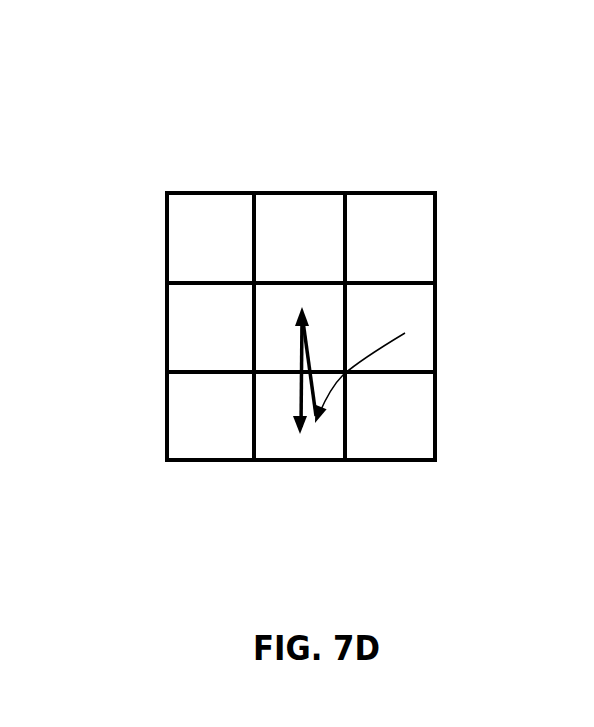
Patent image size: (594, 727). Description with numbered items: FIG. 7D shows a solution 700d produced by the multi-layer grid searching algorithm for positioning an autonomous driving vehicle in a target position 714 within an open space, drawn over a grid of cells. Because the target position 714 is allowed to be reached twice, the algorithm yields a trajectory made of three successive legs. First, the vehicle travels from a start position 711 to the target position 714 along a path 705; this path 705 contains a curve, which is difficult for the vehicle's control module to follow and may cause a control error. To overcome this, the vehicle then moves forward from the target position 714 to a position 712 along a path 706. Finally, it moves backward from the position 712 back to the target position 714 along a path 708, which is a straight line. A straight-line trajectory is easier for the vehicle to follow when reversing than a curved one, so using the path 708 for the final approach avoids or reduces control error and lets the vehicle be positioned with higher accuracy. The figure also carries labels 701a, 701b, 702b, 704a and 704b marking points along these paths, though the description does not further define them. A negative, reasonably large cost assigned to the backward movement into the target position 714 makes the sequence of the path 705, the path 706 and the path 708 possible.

The solution 700d is at (301, 245).
The position 712 is at (296, 306).
The second position point 702b is at (296, 313).
The path 706 is at (305, 358).
The first position point 701b is at (405, 328).
The first position point 701a is at (403, 335).
The start position 711 is at (407, 340).
The path 705 is at (342, 390).
The third position point 704b is at (300, 430).
The third position point 704a is at (300, 432).
The target position 714 is at (300, 432).
The path 708 is at (297, 402).